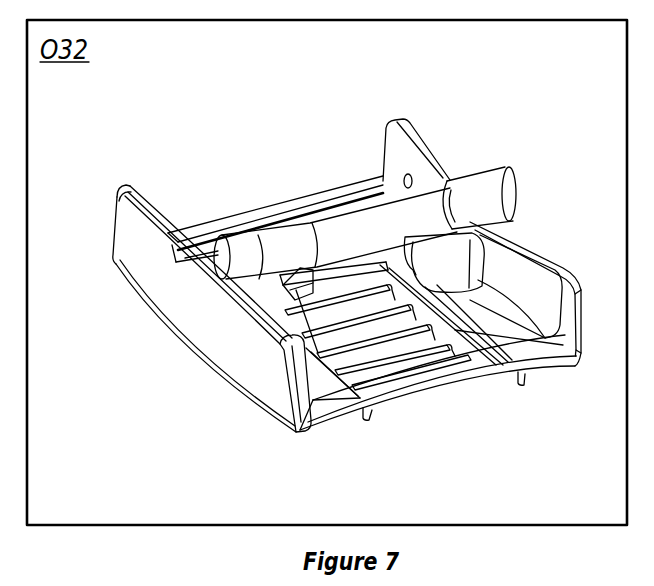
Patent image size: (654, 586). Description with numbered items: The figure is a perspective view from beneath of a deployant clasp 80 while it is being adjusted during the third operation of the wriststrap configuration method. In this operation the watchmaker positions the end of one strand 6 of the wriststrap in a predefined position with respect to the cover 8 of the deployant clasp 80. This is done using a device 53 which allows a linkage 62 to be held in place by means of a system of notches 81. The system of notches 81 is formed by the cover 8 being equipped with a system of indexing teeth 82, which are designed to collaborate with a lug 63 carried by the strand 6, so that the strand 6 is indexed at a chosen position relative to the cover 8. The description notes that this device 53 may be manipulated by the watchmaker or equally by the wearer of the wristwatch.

The cover 8 is at (133, 202).
The deployant clasp 80 is at (274, 156).
The device 53 is at (243, 226).
The lug 63 is at (351, 270).
The strand 6 is at (485, 163).
The linkage 62 is at (253, 306).
The system of indexing teeth 82 is at (350, 333).
The system of notches 81 is at (433, 365).